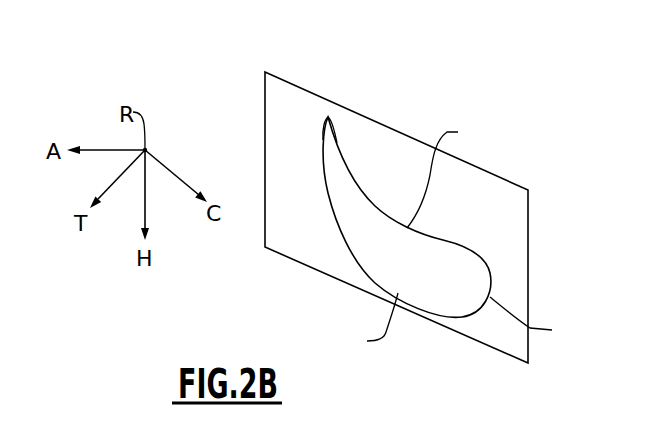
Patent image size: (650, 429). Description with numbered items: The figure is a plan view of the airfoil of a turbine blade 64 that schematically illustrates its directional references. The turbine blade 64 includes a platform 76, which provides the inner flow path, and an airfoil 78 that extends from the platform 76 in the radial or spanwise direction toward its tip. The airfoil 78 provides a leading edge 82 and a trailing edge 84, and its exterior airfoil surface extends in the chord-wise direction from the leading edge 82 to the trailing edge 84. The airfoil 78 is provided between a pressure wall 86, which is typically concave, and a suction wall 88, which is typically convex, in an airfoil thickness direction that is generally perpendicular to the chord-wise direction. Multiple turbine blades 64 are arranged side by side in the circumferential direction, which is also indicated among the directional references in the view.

The turbine blade 64 is at (464, 159).
The platform 76 is at (467, 350).
The airfoil 78 is at (500, 244).
The leading edge 82 is at (537, 320).
The trailing edge 84 is at (328, 115).
The pressure wall 86 is at (449, 174).
The suction wall 88 is at (367, 326).